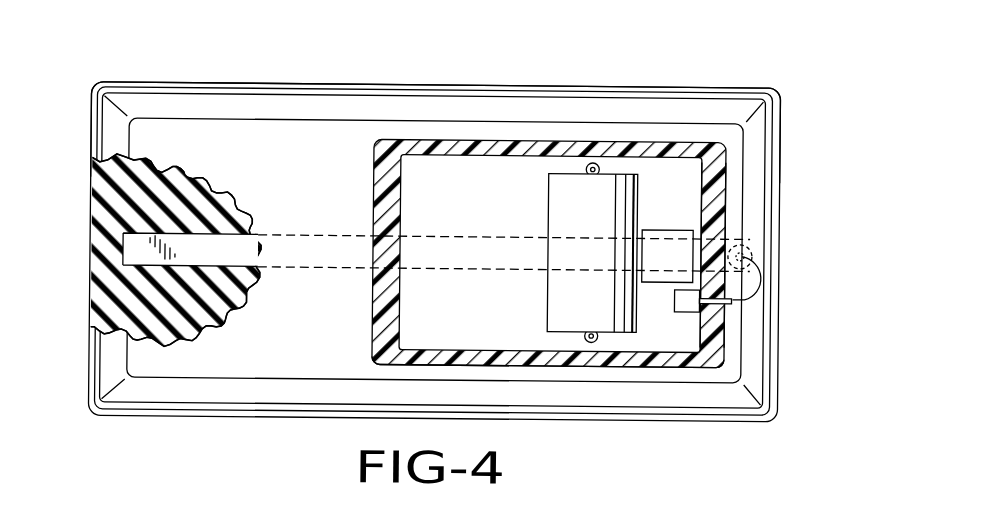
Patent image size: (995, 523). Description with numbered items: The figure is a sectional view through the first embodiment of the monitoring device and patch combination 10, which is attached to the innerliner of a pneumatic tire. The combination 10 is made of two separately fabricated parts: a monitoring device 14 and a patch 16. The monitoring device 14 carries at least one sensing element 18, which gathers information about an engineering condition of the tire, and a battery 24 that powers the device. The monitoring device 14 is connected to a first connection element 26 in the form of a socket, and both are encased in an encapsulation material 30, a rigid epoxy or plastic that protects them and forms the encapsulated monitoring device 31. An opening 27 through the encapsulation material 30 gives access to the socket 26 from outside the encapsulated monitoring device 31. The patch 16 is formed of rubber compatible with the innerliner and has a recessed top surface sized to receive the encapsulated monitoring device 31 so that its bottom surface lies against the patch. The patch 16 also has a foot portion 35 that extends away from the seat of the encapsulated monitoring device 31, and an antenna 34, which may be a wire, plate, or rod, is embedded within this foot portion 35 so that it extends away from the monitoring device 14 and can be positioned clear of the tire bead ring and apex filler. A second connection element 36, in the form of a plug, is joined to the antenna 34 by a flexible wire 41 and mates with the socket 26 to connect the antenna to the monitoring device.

The monitoring device and patch combination 10 is at (251, 59).
The monitoring device 14 is at (706, 194).
The patch 16 is at (157, 431).
The sensing element 18 is at (666, 228).
The battery 24 is at (578, 308).
The first connection element 26 is at (687, 310).
The opening 27 is at (710, 304).
The encapsulation material 30 is at (655, 366).
The encapsulated monitoring device 31 is at (586, 380).
The antenna 34 is at (147, 255).
The foot portion 35 is at (641, 87).
The second connection element 36 is at (732, 300).
The flexible wire 41 is at (767, 275).